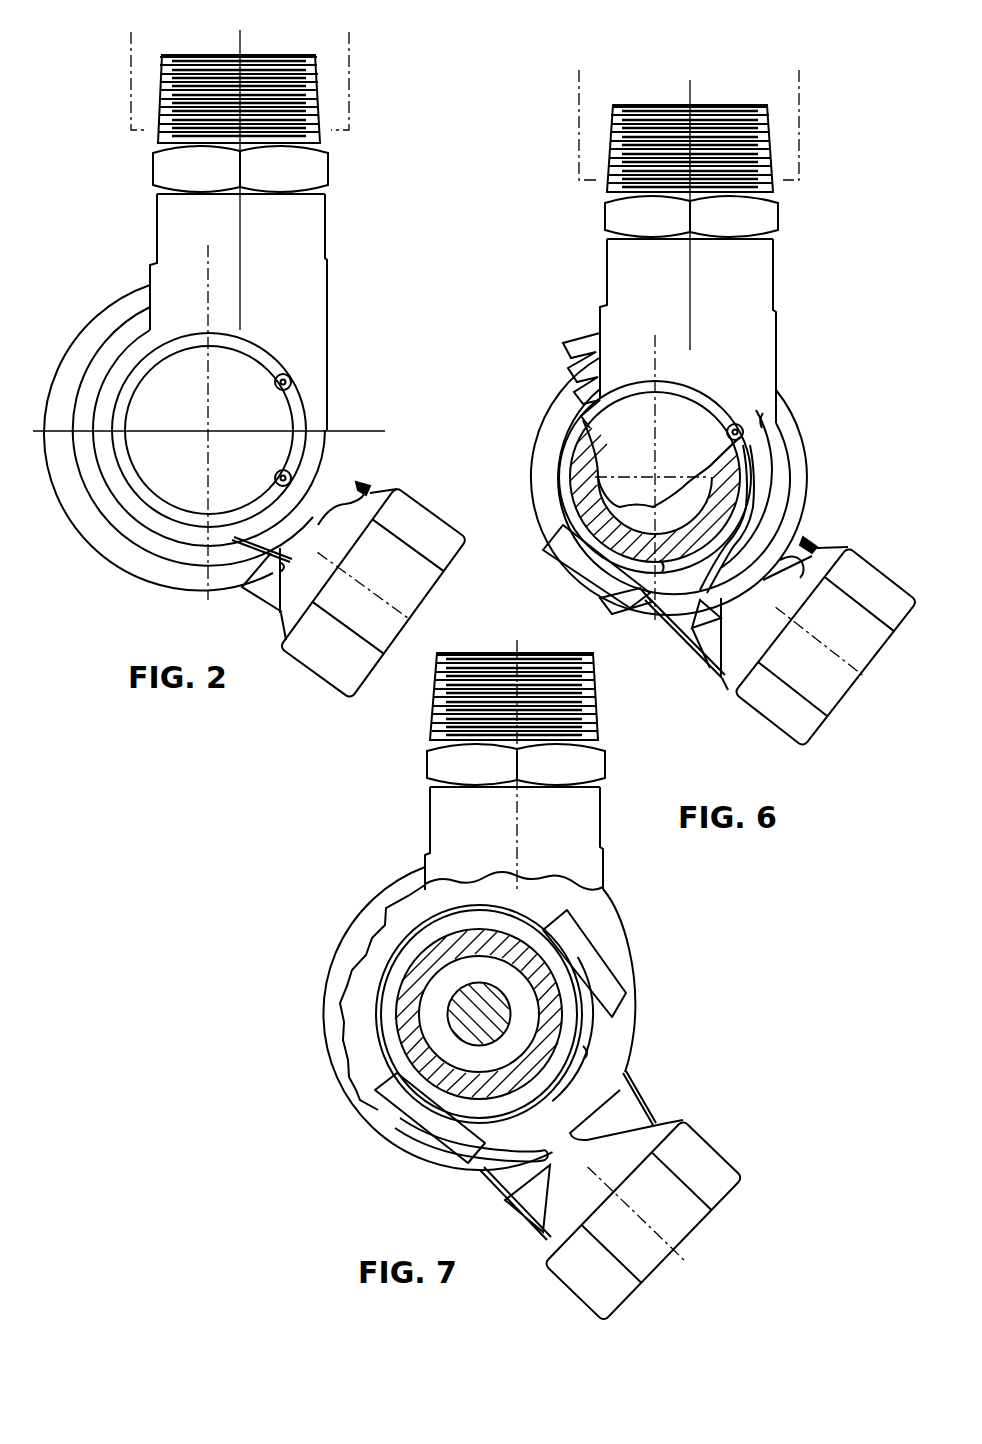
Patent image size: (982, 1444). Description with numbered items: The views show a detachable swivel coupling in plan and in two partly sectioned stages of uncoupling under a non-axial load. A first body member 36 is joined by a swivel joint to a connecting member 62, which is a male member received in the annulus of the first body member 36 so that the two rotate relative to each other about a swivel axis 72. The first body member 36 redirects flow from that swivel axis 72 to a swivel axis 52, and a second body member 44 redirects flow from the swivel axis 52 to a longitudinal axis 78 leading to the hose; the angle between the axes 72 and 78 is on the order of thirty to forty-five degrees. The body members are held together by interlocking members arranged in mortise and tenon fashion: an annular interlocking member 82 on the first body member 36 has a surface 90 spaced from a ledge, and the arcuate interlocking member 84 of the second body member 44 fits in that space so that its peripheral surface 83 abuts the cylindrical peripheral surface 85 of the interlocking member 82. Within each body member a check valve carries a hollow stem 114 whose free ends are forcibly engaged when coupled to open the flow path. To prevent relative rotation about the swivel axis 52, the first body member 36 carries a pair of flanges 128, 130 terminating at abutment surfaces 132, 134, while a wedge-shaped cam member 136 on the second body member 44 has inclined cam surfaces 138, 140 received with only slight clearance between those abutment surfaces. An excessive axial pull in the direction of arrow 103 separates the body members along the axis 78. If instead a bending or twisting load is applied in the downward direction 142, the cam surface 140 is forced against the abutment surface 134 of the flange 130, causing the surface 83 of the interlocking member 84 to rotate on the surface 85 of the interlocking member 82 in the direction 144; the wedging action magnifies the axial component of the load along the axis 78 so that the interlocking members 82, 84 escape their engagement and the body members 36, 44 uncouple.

In FIG. 2, the first body member 36 is at (330, 298).
In FIG. 6, the first body member 36 is at (604, 296).
In FIG. 7, the first body member 36 is at (515, 765).
In FIG. 2, the second body member 44 is at (399, 487).
In FIG. 6, the second body member 44 is at (717, 669).
In FIG. 2, the swivel axis 52 is at (209, 428).
In FIG. 2, the connecting member 62 is at (322, 173).
In FIG. 2, the swivel axis 72 is at (240, 46).
In FIG. 2, the longitudinal axis 78 is at (436, 612).
In FIG. 6, the longitudinal axis 78 is at (862, 678).
In FIG. 7, the longitudinal axis 78 is at (694, 1245).
In FIG. 6, the interlocking member 82 is at (612, 563).
In FIG. 7, the interlocking member 82 is at (400, 1020).
In FIG. 6, the peripheral surface 83 is at (663, 566).
In FIG. 7, the peripheral surface 83 is at (587, 1050).
In FIG. 6, the interlocking member 84 is at (773, 507).
In FIG. 7, the interlocking member 84 is at (427, 1160).
In FIG. 6, the peripheral surface 85 is at (632, 594).
In FIG. 7, the peripheral surface 85 is at (408, 1123).
In FIG. 6, the surface 90 is at (556, 471).
In FIG. 7, the surface 90 is at (381, 993).
In FIG. 6, the arrow 103 is at (661, 680).
In FIG. 7, the hollow stem 114 is at (456, 1003).
In FIG. 2, the flange 128 is at (355, 449).
In FIG. 6, the flange 128 is at (804, 465).
In FIG. 2, the flange 130 is at (122, 553).
In FIG. 6, the flange 130 is at (711, 647).
In FIG. 7, the flange 130 is at (477, 1172).
In FIG. 2, the abutment surface 132 is at (372, 478).
In FIG. 6, the abutment surface 132 is at (805, 537).
In FIG. 2, the abutment surface 134 is at (245, 594).
In FIG. 6, the abutment surface 134 is at (722, 604).
In FIG. 7, the abutment surface 134 is at (513, 1195).
In FIG. 2, the cam member 136 is at (295, 607).
In FIG. 6, the cam member 136 is at (724, 676).
In FIG. 2, the inclined cam surface 138 is at (326, 520).
In FIG. 6, the inclined cam surface 138 is at (798, 576).
In FIG. 2, the inclined cam surface 140 is at (284, 568).
In FIG. 6, the inclined cam surface 140 is at (721, 632).
In FIG. 6, the downward direction 142 is at (840, 723).
In FIG. 6, the direction of rotation 144 is at (860, 515).
In FIG. 7, the direction of rotation 144 is at (670, 1090).